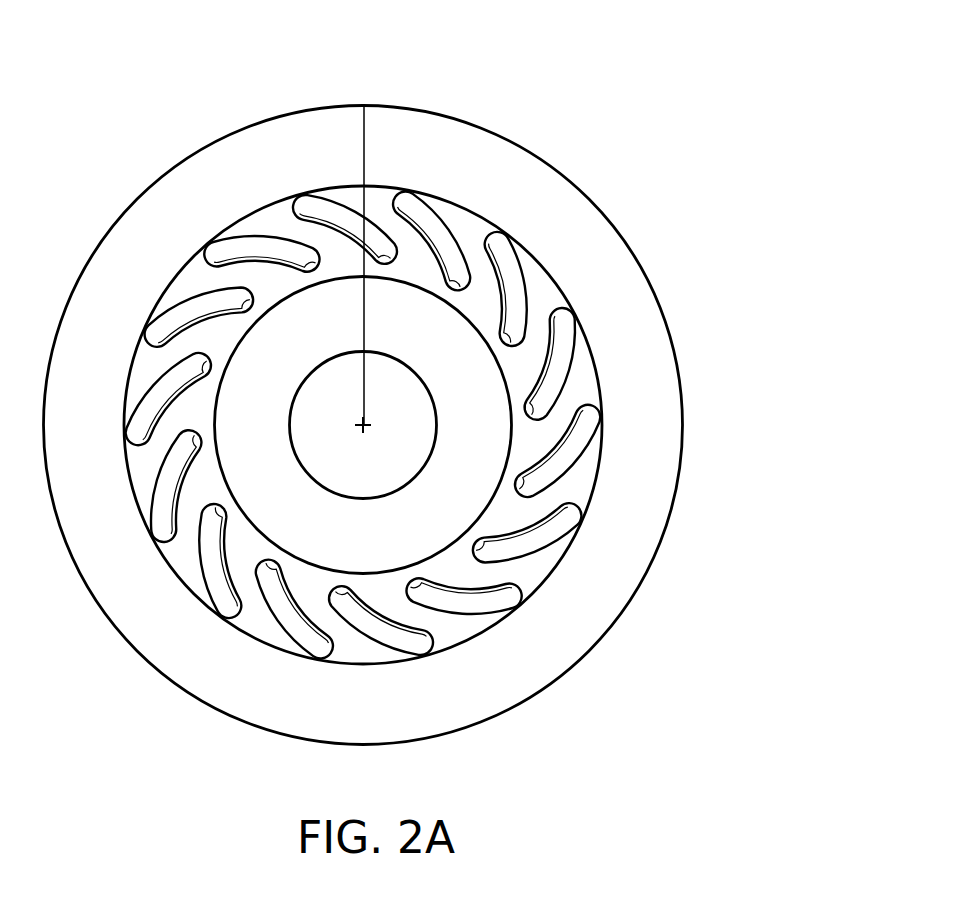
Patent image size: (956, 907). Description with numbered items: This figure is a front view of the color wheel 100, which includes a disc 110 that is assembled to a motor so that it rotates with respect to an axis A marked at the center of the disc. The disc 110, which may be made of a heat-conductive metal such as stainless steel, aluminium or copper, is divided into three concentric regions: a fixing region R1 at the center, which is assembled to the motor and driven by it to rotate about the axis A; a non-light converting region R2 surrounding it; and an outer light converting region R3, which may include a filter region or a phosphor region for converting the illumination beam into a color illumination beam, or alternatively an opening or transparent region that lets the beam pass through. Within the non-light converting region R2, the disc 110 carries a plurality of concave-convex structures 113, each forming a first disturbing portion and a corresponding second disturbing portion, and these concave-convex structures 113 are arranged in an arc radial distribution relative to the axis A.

The color wheel 100 is at (670, 114).
The disc 110 is at (583, 190).
The concave-convex structures 113 is at (533, 288).
The fixing region R1 is at (365, 325).
The non-light converting region R2 is at (365, 210).
The light converting region R3 is at (365, 146).
The axis A is at (362, 430).